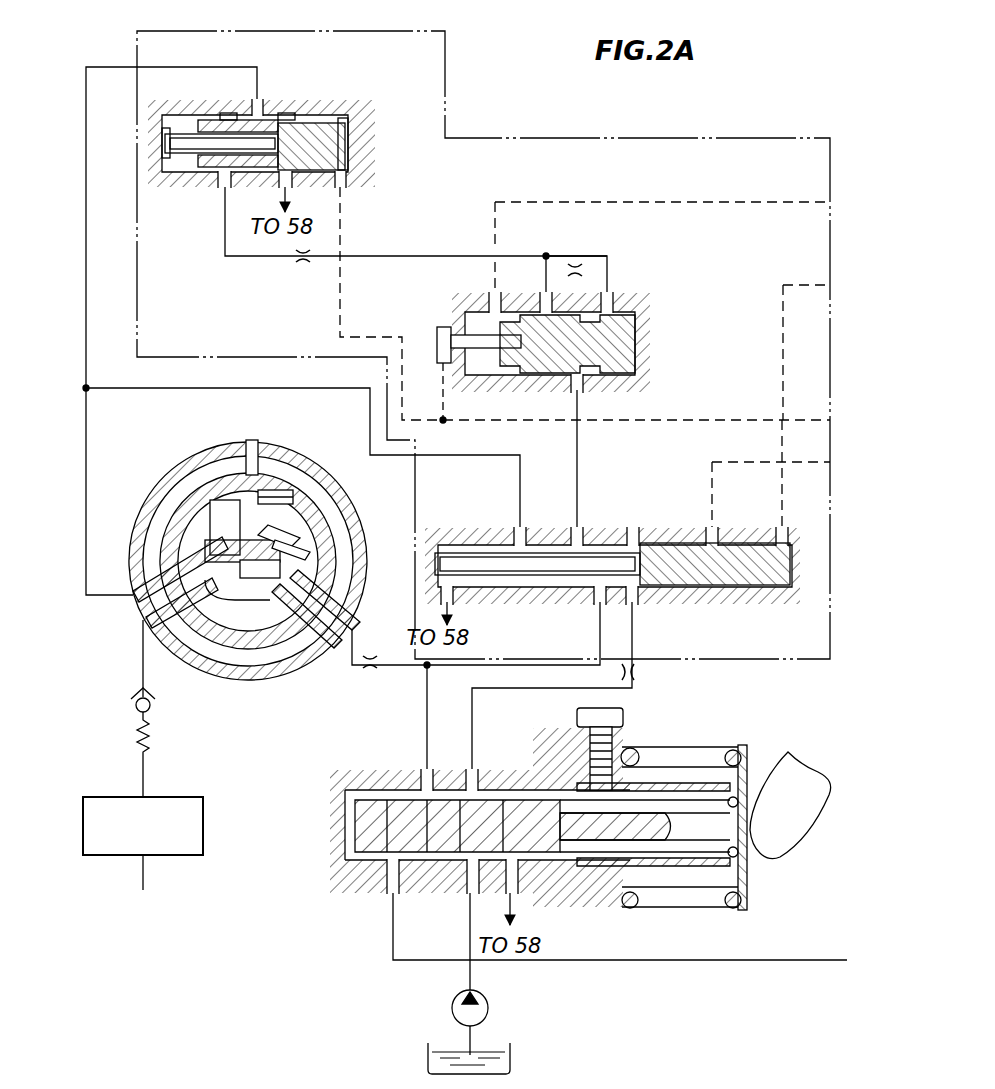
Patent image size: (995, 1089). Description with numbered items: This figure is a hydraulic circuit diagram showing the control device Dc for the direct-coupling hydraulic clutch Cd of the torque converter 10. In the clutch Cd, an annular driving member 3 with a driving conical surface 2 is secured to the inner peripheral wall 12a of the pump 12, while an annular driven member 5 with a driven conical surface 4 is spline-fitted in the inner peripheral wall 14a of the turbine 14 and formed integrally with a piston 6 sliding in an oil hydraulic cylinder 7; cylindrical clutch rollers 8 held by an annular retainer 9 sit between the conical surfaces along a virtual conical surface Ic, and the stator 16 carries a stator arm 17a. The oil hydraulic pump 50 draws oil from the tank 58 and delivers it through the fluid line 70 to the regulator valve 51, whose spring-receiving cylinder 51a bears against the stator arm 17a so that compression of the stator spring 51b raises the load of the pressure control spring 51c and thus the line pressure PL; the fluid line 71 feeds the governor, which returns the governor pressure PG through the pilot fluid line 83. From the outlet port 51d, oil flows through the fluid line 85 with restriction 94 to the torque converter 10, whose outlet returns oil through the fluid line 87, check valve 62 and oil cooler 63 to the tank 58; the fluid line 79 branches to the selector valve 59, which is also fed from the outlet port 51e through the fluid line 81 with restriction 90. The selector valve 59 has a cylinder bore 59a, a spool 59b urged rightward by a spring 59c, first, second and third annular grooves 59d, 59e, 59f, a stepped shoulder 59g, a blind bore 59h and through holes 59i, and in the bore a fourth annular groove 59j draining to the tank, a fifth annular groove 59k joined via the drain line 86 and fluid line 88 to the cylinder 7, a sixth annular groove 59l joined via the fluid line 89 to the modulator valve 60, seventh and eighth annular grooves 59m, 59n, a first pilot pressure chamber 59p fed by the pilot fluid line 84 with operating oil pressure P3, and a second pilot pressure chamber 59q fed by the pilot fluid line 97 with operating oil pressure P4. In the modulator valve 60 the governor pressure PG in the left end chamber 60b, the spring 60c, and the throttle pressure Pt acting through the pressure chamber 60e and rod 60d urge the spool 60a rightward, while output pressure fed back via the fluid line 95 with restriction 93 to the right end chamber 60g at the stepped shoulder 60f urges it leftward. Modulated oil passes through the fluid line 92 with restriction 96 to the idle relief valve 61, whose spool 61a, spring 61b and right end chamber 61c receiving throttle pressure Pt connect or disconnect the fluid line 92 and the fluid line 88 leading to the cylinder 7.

The driving conical surface 2 is at (295, 535).
The annular driving member 3 is at (300, 505).
The driven conical surface 4 is at (272, 578).
The annular driven member 5 is at (210, 590).
The piston 6 is at (210, 515).
The oil hydraulic cylinder 7 is at (175, 540).
The clutch rollers 8 is at (245, 562).
The annular retainer 9 is at (305, 552).
The torque converter 10 is at (245, 592).
The pump 12 is at (335, 530).
The inner peripheral wall 12a is at (290, 495).
The turbine 14 is at (136, 518).
The inner peripheral wall 14a is at (190, 500).
The stator 16 is at (215, 676).
The stator arm 17a is at (792, 835).
The oil hydraulic pump 50 is at (490, 1002).
The regulator valve 51 is at (563, 832).
The spring-receiving cylinder 51a is at (750, 870).
The stator spring 51b is at (736, 750).
The pressure control spring 51c is at (565, 860).
The outlet port 51d is at (422, 770).
The outlet port 51e is at (478, 775).
The tank 58 is at (512, 1058).
The selector valve 59 is at (627, 557).
The cylinder bore 59a is at (478, 545).
The spool 59b is at (715, 564).
The spring 59c is at (495, 598).
The first annular groove 59d is at (545, 535).
The second annular groove 59e is at (598, 590).
The third annular groove 59f is at (645, 535).
The stepped shoulder 59g is at (718, 532).
The blind bore 59h is at (565, 598).
The through holes 59i is at (540, 588).
The fourth annular groove 59j is at (450, 545).
The fifth annular groove 59k is at (570, 545).
The sixth annular groove 59l is at (578, 545).
The seventh annular groove 59m is at (630, 604).
The eighth annular groove 59n is at (640, 600).
The first pilot pressure chamber 59p is at (712, 604).
The second pilot pressure chamber 59q is at (785, 532).
The modulator valve 60 is at (545, 344).
The spool 60a is at (552, 368).
The left end chamber 60b is at (492, 372).
The spring 60c is at (510, 322).
The rod 60d is at (458, 335).
The pressure chamber 60e is at (437, 335).
The stepped shoulder 60f is at (620, 368).
The right end chamber 60g is at (612, 308).
The idle relief valve 61 is at (281, 140).
The spool 61a is at (305, 125).
The spring 61b is at (195, 160).
The right end chamber 61c is at (350, 130).
The check valve 62 is at (136, 710).
The oil cooler 63 is at (103, 797).
The fluid line 70 is at (470, 985).
The fluid line 71 is at (770, 960).
The fluid line 79 is at (470, 675).
The fluid line 81 is at (530, 689).
The pilot fluid line 83 is at (682, 204).
The pilot fluid line 84 is at (782, 465).
The fluid line 85 is at (427, 702).
The drain line 86 is at (520, 470).
The fluid line 87 is at (143, 663).
The fluid line 88 is at (105, 78).
The fluid line 89 is at (578, 468).
The restriction 90 is at (640, 676).
The fluid line 92 is at (435, 256).
The restriction 93 is at (575, 249).
The restriction 94 is at (365, 672).
The fluid line 95 is at (607, 258).
The restriction 96 is at (303, 270).
The pilot fluid line 97 is at (783, 330).
The control device Dc is at (762, 138).
The governor pressure PG is at (577, 202).
The operating oil pressure P4 is at (783, 375).
The operating oil pressure P3 is at (745, 462).
The throttle pressure Pt is at (669, 445).
The line pressure PL is at (690, 960).
The virtual conical surface Ic is at (350, 572).
The direct-coupling hydraulic clutch Cd is at (278, 585).